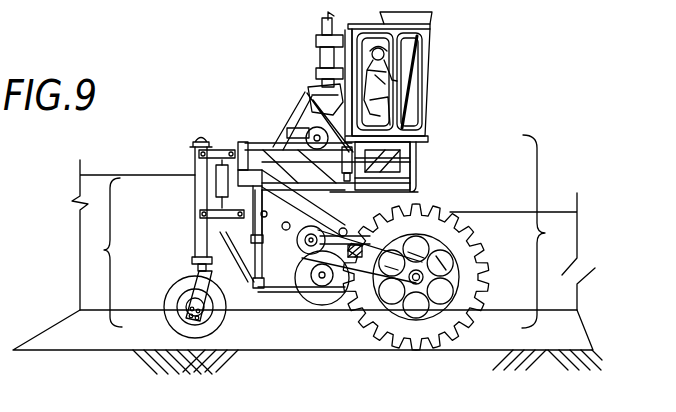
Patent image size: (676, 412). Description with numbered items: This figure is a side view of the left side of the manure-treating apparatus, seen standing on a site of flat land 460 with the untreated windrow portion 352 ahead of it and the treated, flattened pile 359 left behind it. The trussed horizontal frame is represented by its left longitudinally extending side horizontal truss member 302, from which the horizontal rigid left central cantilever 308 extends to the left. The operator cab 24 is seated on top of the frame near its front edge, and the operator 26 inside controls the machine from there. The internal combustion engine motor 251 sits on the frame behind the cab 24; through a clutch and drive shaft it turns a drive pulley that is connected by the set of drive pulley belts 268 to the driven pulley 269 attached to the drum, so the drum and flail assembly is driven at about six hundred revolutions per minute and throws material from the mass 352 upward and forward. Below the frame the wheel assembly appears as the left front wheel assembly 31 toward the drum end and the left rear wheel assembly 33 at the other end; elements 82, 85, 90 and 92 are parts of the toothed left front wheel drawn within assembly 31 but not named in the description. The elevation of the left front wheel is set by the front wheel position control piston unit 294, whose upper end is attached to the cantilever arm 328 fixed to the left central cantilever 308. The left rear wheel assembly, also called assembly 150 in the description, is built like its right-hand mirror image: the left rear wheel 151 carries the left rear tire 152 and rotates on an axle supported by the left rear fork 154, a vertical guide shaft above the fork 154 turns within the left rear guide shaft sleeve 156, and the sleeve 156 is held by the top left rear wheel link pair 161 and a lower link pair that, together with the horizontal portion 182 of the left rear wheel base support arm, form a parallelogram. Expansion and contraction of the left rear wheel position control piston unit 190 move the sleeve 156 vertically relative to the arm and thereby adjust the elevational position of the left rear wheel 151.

The operator cab 24 is at (428, 44).
The operator 26 is at (396, 81).
The left front wheel assembly 31 is at (542, 231).
The left rear wheel assembly 33 is at (103, 252).
The drive wheel hub 82 is at (445, 287).
The drive wheel disc 85 is at (436, 255).
The drive wheel 90 is at (413, 216).
The drive wheel holes 92 is at (478, 258).
The left rear wheel assembly 150 is at (191, 160).
The left rear wheel 151 is at (182, 300).
The left rear tire 152 is at (170, 300).
The left rear fork 154 is at (196, 293).
The left rear guide shaft sleeve 156 is at (197, 197).
The top left rear wheel link pair 161 is at (212, 150).
The horizontal portion of left rear wheel base support arm 182 is at (203, 240).
The left rear wheel position control piston unit 190 is at (215, 178).
The motor 251 is at (318, 117).
The drive pulley belts 268 is at (262, 296).
The driven pulley 269 is at (323, 300).
The front wheel position control piston unit 294 is at (400, 165).
The left longitudinally extending side horizontal truss member 302 is at (269, 147).
The left central cantilever 308 is at (388, 141).
The cantilever arm 328 is at (412, 128).
The portion of mass 352 is at (576, 221).
The pile 359 is at (88, 233).
The site of flat land 460 is at (575, 334).